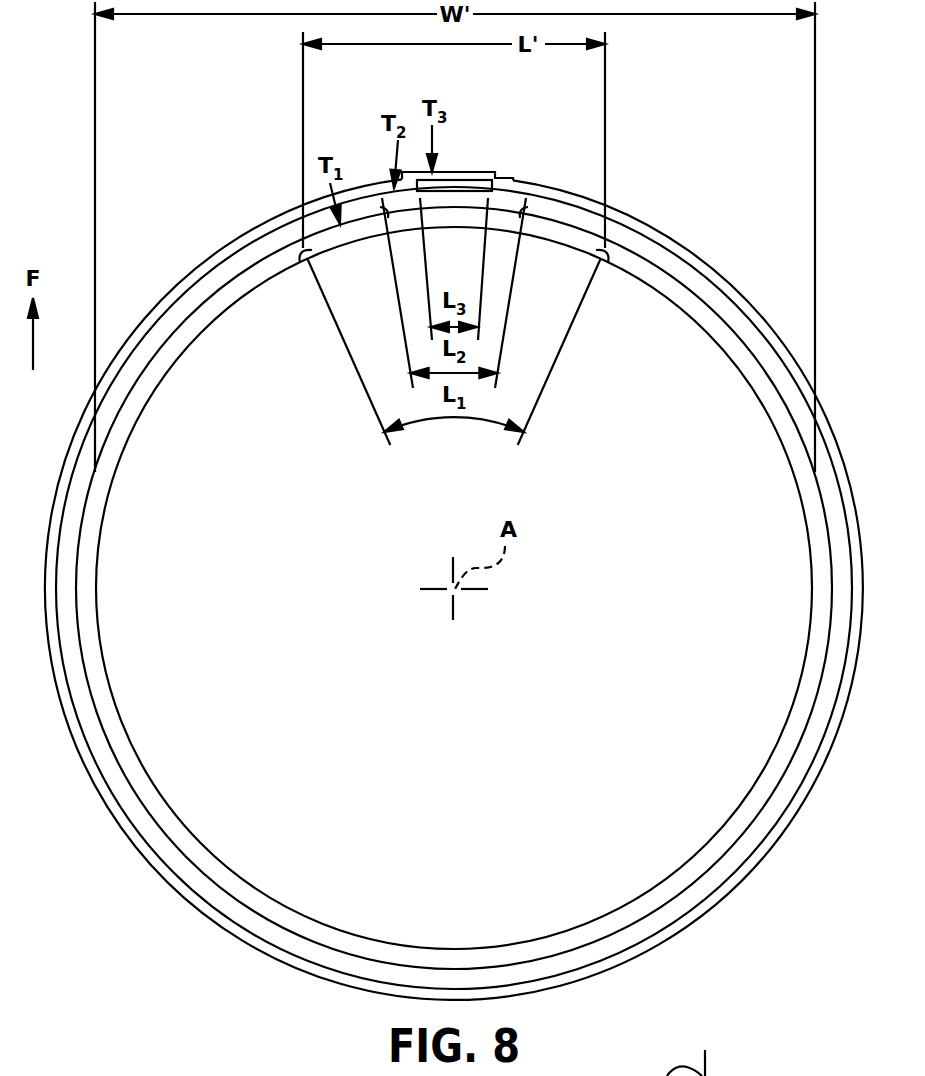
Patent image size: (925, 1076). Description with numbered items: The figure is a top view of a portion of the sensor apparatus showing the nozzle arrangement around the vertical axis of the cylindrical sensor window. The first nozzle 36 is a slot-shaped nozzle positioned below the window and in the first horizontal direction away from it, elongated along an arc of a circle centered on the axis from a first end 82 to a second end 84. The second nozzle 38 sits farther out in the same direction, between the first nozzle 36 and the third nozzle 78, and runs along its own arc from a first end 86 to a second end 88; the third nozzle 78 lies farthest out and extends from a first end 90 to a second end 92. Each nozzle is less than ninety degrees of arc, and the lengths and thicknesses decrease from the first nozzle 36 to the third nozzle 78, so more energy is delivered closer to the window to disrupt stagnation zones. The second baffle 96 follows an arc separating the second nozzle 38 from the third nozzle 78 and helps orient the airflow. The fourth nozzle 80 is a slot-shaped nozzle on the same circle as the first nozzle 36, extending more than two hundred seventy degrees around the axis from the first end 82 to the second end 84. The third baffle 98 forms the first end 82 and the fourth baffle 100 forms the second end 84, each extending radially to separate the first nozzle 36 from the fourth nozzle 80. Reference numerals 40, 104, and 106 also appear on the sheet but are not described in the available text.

The first nozzle 36 is at (556, 233).
The second nozzle 38 is at (460, 200).
The ring 40 is at (796, 713).
The third nozzle 78 is at (472, 182).
The fourth nozzle 80 is at (708, 337).
The first end 82 is at (558, 352).
The second end 84 is at (350, 255).
The first end 86 is at (508, 200).
The second end 88 is at (400, 217).
The first end 90 is at (506, 186).
The second end 92 is at (406, 173).
The second baffle 96 is at (456, 182).
The third baffle 98 is at (637, 253).
The fourth baffle 100 is at (283, 255).
The component 104 is at (647, 1063).
The component 106 is at (810, 1075).